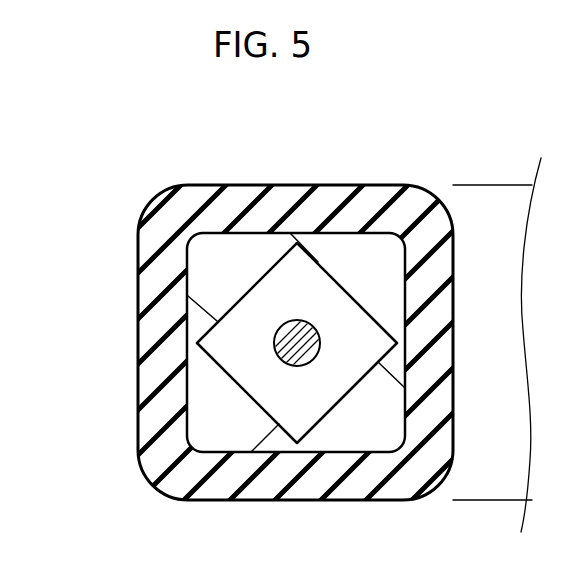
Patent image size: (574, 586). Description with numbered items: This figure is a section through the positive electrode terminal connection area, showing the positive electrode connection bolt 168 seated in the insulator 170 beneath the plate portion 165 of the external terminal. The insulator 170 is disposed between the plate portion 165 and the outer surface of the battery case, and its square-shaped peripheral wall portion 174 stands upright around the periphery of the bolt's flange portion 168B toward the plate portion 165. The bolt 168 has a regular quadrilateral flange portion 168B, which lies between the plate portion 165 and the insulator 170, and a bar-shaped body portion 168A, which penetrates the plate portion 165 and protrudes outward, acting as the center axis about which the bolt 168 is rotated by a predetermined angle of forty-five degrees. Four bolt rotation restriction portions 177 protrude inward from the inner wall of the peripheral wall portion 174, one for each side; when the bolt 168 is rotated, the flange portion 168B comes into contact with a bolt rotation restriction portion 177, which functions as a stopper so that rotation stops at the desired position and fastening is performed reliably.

The plate portion 165 is at (479, 183).
The insulator 170 is at (137, 339).
The peripheral wall portion 174 is at (173, 223).
The positive electrode connection bolt 168 is at (355, 287).
The bar-shaped body portion 168A is at (275, 350).
The flange portion 168B is at (252, 383).
The bolt rotation restriction portion 177 is at (200, 317).